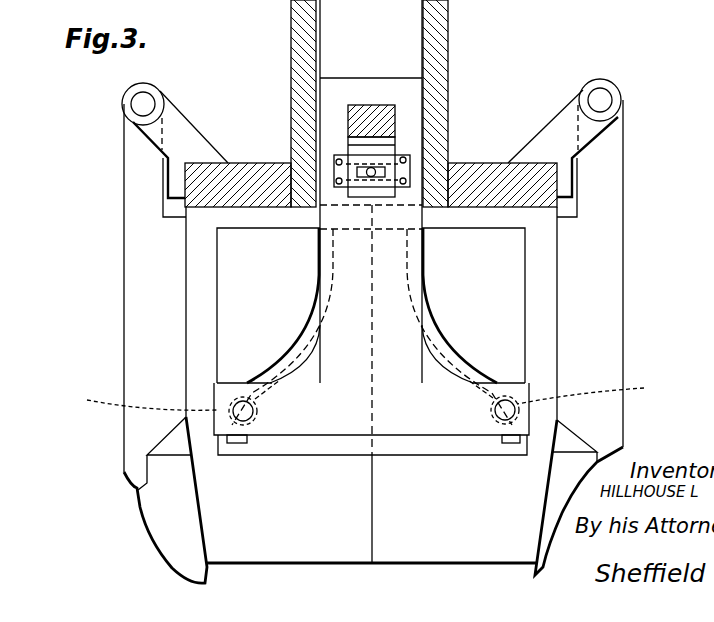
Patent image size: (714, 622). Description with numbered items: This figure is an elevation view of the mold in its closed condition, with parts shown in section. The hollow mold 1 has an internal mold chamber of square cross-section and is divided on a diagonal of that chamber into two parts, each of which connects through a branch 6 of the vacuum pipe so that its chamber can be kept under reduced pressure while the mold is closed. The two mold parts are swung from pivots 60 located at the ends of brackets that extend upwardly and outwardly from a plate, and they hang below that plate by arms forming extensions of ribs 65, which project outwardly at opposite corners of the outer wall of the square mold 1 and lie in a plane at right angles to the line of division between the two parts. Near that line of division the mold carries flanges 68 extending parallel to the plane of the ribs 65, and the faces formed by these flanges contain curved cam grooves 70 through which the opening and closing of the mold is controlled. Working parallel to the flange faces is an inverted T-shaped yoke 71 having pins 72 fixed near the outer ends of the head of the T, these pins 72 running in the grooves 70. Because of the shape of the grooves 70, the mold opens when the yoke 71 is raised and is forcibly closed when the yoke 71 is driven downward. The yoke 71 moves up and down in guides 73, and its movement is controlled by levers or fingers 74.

The hollow mold 1 is at (415, 563).
The branch of the pipe 6 is at (158, 523).
The pivot 60 is at (131, 100).
The rib 65 is at (147, 302).
The flange 68 is at (227, 255).
The curved cam groove 70 is at (303, 330).
The inverted T-shaped yoke 71 is at (433, 420).
The pin 72 is at (365, 327).
The guide 73 is at (296, 87).
The lever or finger 74 is at (363, 118).